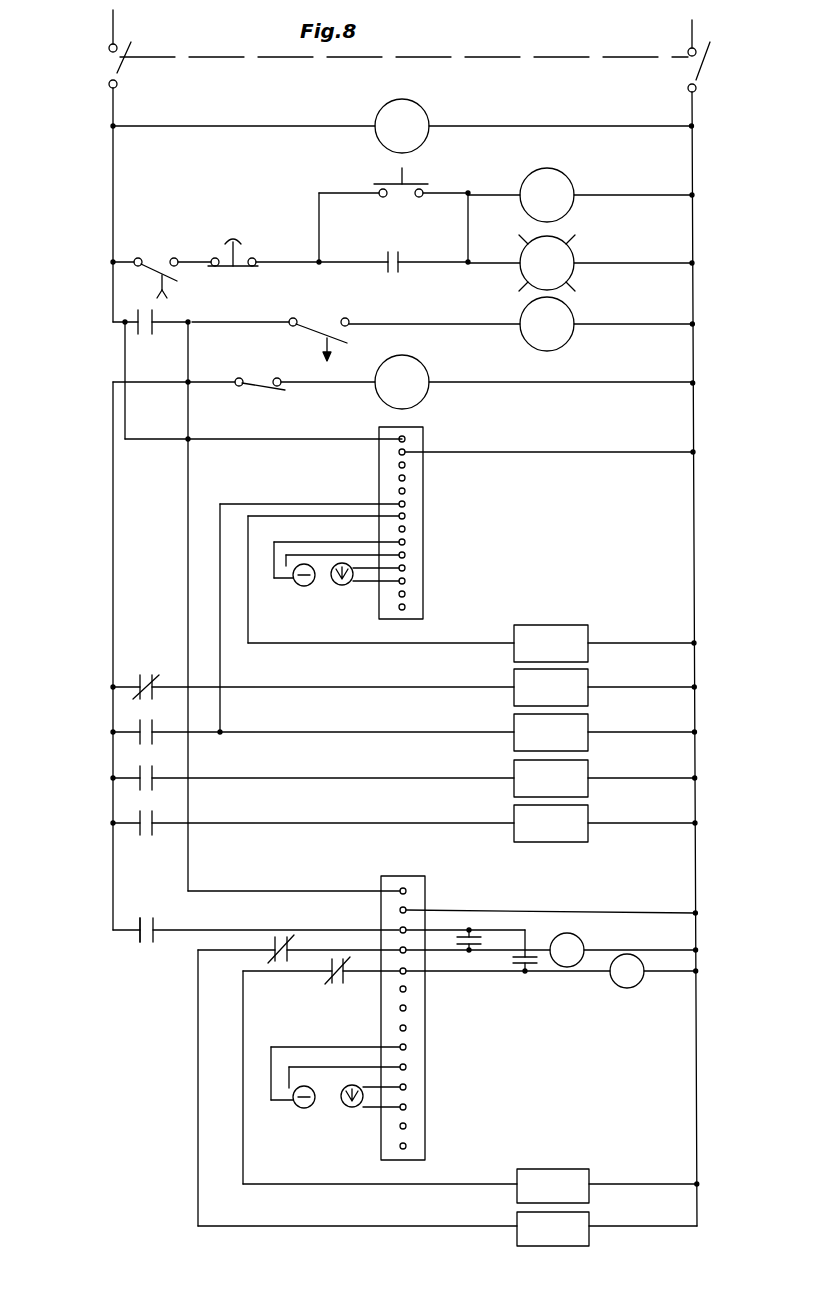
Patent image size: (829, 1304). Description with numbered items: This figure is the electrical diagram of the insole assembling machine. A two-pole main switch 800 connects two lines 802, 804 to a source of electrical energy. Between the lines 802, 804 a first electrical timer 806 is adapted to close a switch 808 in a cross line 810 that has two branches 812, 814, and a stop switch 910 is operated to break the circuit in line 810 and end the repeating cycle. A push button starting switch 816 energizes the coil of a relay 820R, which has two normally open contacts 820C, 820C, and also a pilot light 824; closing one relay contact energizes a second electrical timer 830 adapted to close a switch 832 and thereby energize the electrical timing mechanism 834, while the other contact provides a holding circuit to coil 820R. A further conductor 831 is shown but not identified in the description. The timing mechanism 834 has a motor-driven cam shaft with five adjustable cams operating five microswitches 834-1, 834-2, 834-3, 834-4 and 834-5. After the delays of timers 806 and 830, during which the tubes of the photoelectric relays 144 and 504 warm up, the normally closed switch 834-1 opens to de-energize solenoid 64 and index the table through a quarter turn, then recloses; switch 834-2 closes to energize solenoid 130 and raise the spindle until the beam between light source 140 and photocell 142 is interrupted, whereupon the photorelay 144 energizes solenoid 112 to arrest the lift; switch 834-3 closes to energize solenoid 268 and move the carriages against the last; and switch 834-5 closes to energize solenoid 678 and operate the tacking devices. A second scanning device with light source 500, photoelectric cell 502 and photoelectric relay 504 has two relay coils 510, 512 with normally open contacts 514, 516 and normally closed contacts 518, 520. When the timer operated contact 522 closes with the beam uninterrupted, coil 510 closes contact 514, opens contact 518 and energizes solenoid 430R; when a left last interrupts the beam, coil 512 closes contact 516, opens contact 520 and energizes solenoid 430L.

The two-pole main switch 800 is at (127, 70).
The line 802 is at (113, 210).
The line 804 is at (697, 243).
The first electrical timer 806 is at (421, 108).
The switch 808 is at (153, 277).
The cross line 810 is at (283, 258).
The branch 812 is at (598, 195).
The branch 814 is at (598, 263).
The push button starting switch 816 is at (405, 172).
The normally open contacts 820C is at (398, 270).
The relay coil 820R is at (566, 176).
The pilot light 824 is at (572, 245).
The second electrical timer 830 is at (421, 364).
The bus line 831 is at (113, 472).
The switch 832 is at (317, 332).
The timing mechanism 834 is at (568, 306).
The stop switch 910 is at (232, 238).
The photorelay 144 is at (423, 532).
The light source 140 is at (303, 587).
The photocell 142 is at (340, 586).
The solenoid 112 is at (588, 632).
The solenoid 64 is at (588, 674).
The solenoid 130 is at (588, 720).
The solenoid 268 is at (588, 765).
The solenoid 678 is at (588, 810).
The microswitch 834-1 is at (138, 682).
The microswitch 834-2 is at (137, 728).
The microswitch 834-3 is at (137, 774).
The microswitch 834-4 is at (153, 924).
The microswitch 834-5 is at (137, 819).
The timer operated contact 522 is at (140, 937).
The normally closed contact 520 is at (275, 944).
The normally closed contact 518 is at (330, 975).
The photoelectric relay 504 is at (425, 1062).
The normally open contact 514 is at (473, 926).
The normally open contact 516 is at (517, 968).
The relay coil 510 is at (580, 937).
The relay coil 512 is at (627, 988).
The light source 500 is at (304, 1108).
The photoelectric cell 502 is at (345, 1106).
The solenoid 430L is at (589, 1172).
The solenoid 430R is at (589, 1216).